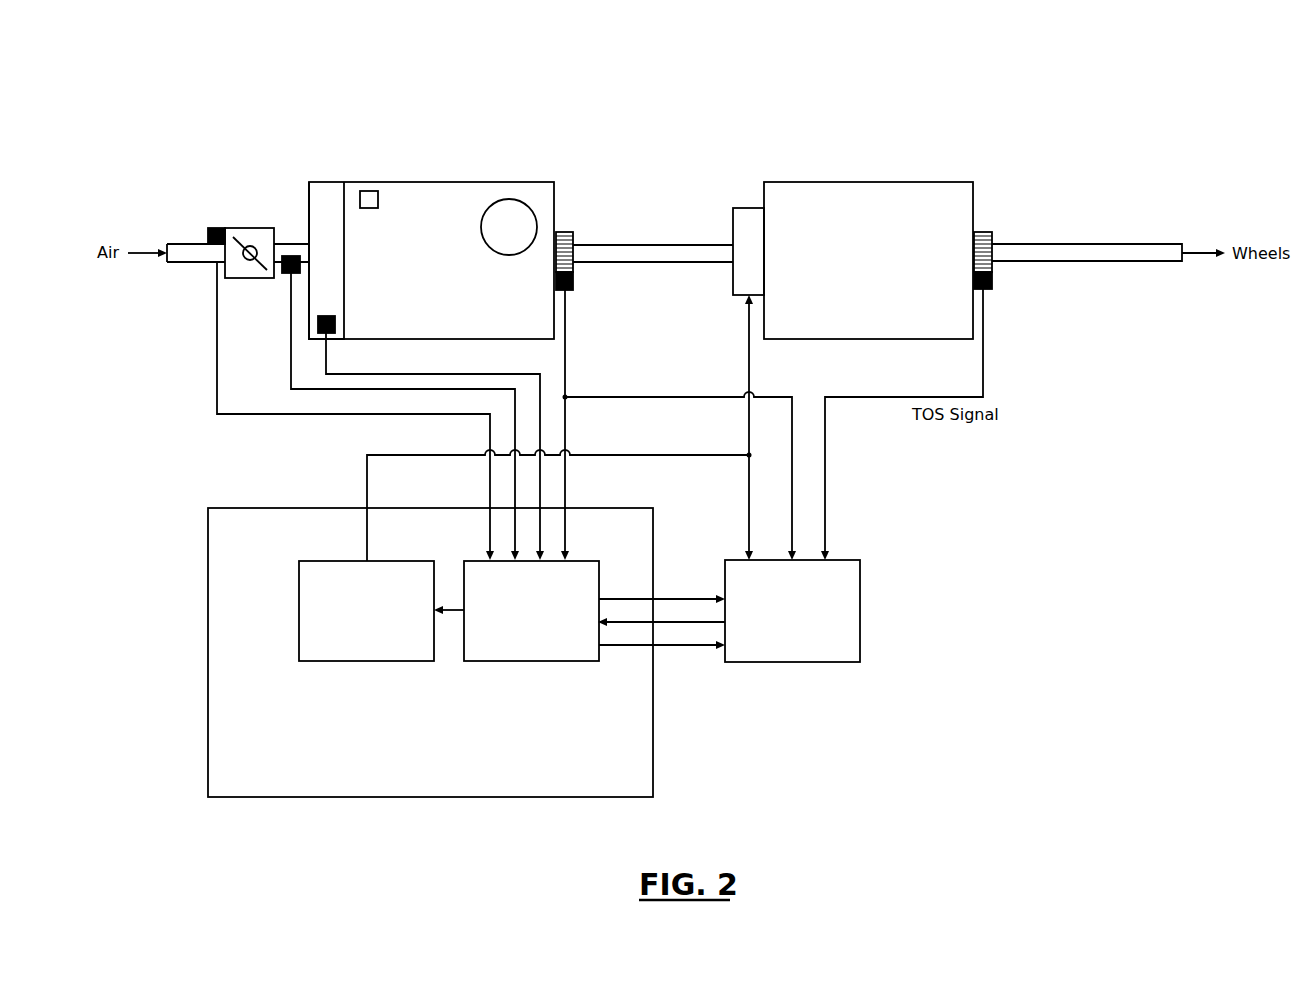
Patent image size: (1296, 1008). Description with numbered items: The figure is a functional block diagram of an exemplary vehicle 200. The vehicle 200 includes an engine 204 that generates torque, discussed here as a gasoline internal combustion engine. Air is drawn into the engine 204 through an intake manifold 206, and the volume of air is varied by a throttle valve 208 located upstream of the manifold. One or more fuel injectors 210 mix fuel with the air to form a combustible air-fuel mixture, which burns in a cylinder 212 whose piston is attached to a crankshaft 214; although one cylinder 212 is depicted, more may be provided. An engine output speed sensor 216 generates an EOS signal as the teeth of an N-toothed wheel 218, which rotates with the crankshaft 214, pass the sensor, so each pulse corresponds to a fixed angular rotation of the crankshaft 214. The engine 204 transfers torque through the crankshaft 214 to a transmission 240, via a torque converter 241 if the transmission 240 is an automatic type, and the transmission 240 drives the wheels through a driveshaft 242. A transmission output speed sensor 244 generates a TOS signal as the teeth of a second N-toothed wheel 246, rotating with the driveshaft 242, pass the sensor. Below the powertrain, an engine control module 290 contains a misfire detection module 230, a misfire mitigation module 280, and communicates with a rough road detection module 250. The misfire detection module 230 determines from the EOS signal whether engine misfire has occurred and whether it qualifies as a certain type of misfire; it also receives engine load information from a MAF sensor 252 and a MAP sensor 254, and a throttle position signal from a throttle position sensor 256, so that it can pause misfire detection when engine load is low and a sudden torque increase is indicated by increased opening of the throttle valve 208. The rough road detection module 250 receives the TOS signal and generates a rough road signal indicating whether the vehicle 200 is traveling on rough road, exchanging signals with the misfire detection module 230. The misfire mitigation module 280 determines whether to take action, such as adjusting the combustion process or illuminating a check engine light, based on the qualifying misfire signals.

The vehicle 200 is at (1135, 62).
The engine 204 is at (447, 182).
The intake manifold 206 is at (323, 182).
The throttle valve 208 is at (252, 228).
The fuel injector 210 is at (369, 208).
The cylinder 212 is at (509, 255).
The crankshaft 214 is at (706, 245).
The engine output speed sensor 216 is at (574, 284).
The N-toothed wheel 218 is at (566, 232).
The misfire detection module 230 is at (530, 662).
The transmission 240 is at (868, 182).
The torque converter 241 is at (740, 208).
The driveshaft 242 is at (1100, 244).
The transmission output speed sensor 244 is at (992, 284).
The N-toothed wheel 246 is at (985, 232).
The rough road detection module 250 is at (860, 600).
The MAF sensor 252 is at (290, 273).
The MAP sensor 254 is at (335, 324).
The throttle position sensor 256 is at (213, 228).
The misfire mitigation module 280 is at (365, 662).
The engine control module 290 is at (208, 672).